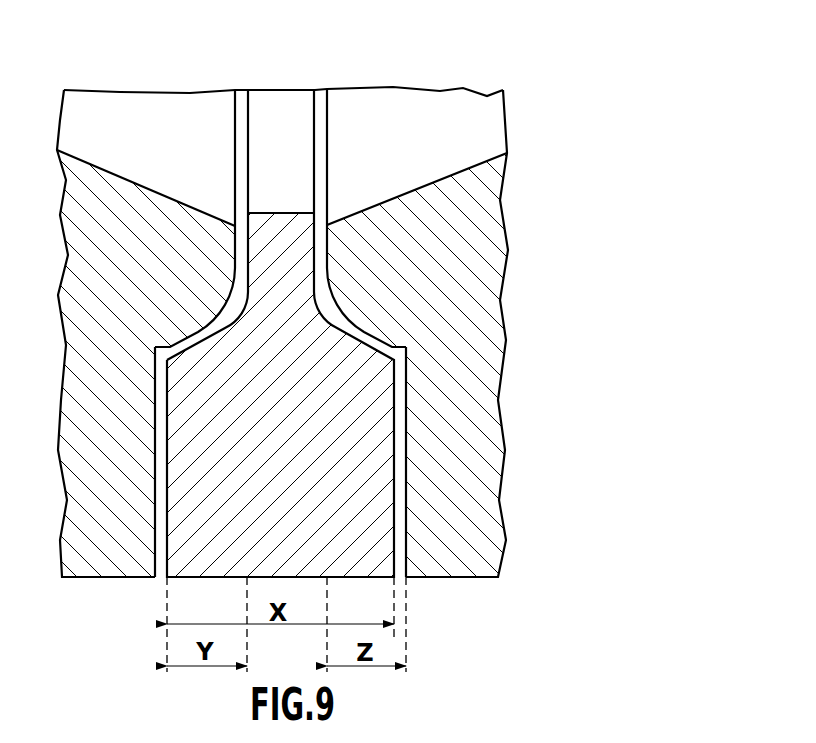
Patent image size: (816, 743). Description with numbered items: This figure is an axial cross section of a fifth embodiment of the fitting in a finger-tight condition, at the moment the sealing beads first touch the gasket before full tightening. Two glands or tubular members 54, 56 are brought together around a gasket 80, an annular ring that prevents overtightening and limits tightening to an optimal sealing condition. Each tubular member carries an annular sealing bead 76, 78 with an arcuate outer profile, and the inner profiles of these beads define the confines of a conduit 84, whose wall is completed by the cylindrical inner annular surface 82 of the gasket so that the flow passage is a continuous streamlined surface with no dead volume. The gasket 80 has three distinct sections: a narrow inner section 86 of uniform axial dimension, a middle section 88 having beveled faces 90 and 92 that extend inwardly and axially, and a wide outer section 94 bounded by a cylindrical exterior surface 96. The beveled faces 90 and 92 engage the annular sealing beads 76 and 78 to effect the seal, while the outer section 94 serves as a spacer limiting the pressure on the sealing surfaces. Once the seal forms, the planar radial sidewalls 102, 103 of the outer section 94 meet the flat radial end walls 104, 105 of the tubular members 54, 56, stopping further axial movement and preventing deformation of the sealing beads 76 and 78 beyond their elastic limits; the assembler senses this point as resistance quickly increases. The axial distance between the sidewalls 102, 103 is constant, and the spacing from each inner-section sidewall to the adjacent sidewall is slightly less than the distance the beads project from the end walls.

The tubular member 54 is at (80, 562).
The tubular member 56 is at (476, 176).
The annular sealing bead 76 is at (192, 218).
The annular sealing bead 78 is at (357, 218).
The gasket 80 is at (293, 86).
The inner annular surface 82 is at (260, 211).
The conduit 84 is at (135, 100).
The inner section 86 is at (286, 232).
The middle section 88 is at (186, 338).
The beveled face 90 is at (337, 298).
The beveled face 92 is at (226, 325).
The outer section 94 is at (180, 440).
The exterior surface 96 is at (188, 580).
The radial sidewall 102 is at (390, 562).
The radial sidewall 103 is at (163, 508).
The radial end wall 104 is at (415, 565).
The radial end wall 105 is at (156, 544).